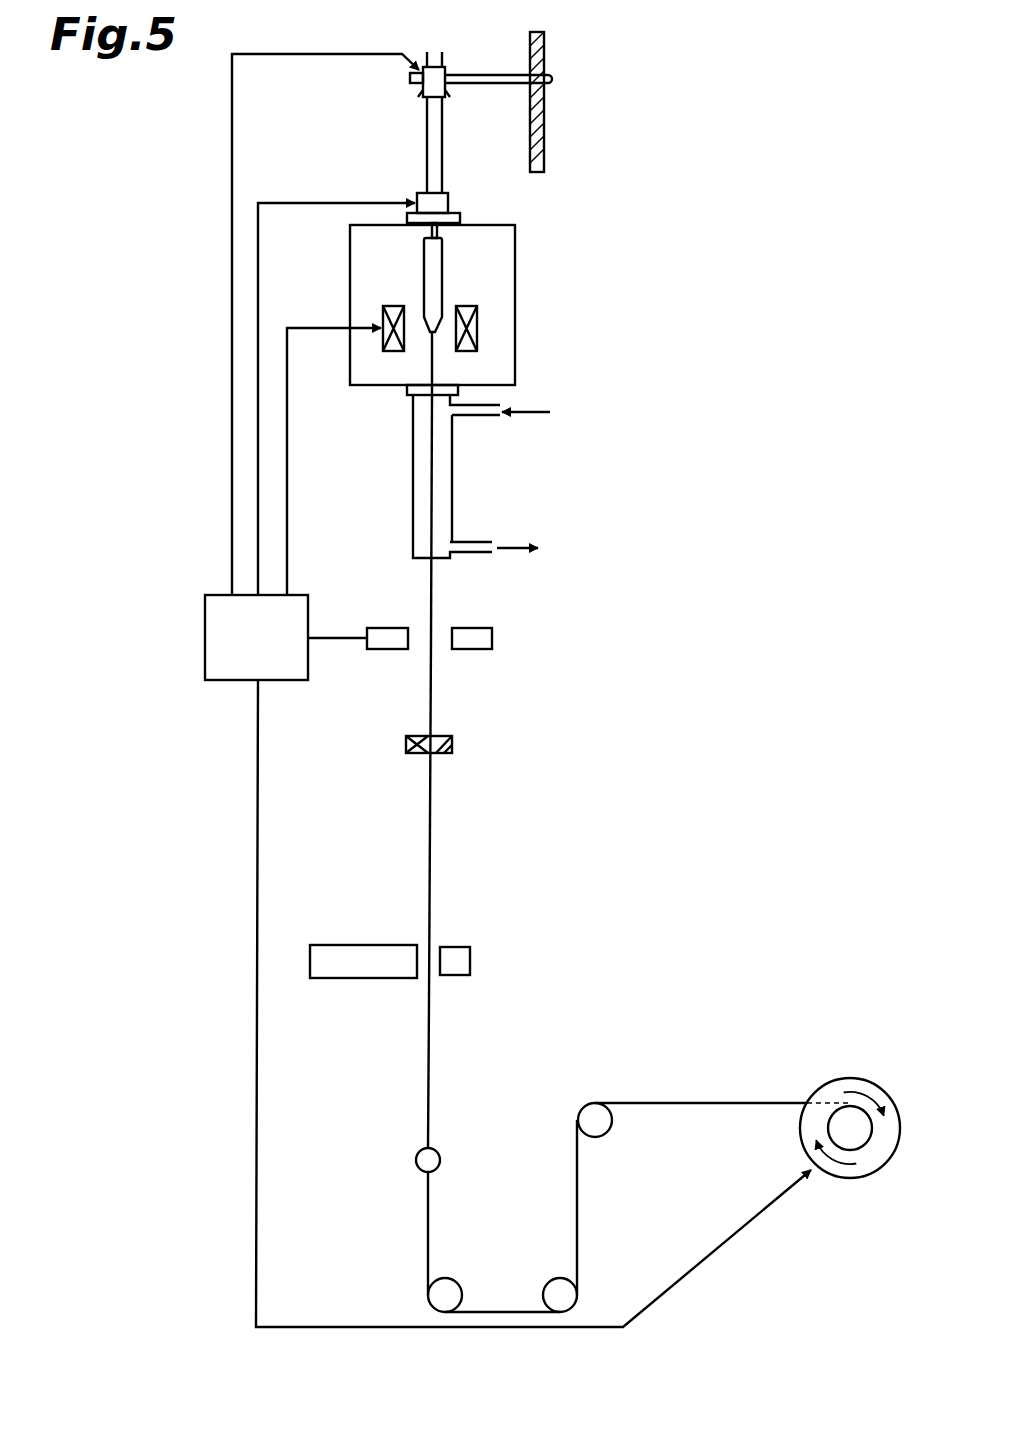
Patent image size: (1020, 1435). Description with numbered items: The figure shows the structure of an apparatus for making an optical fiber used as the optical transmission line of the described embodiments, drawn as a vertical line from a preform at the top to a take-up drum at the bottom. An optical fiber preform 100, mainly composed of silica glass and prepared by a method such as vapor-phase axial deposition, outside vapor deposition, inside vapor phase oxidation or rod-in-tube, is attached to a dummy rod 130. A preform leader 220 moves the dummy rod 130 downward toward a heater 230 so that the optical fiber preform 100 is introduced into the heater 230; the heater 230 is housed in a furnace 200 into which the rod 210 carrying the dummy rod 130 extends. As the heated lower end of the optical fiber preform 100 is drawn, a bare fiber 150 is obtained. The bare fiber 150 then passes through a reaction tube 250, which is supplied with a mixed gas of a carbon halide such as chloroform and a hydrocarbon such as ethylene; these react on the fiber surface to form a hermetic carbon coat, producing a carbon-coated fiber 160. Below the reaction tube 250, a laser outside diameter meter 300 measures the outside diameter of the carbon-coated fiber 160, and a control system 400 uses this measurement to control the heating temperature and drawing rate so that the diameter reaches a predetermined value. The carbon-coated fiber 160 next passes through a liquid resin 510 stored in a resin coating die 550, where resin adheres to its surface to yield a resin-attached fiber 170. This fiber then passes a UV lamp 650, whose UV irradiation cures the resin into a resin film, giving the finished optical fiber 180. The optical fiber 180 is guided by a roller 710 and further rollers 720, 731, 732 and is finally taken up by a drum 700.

The optical fiber preform 100 is at (433, 283).
The dummy rod 130 is at (437, 230).
The bare fiber 150 is at (433, 375).
The carbon-coated fiber 160 is at (432, 592).
The resin-attached fiber 170 is at (430, 860).
The optical fiber 180 is at (430, 1038).
The drawing furnace 200 is at (515, 335).
The feed rod 210 is at (457, 213).
The preform leader 220 is at (544, 108).
The heater 230 is at (393, 351).
The reaction tube 250 is at (450, 500).
The laser outside diameter meter 300 is at (492, 638).
The control system 400 is at (292, 680).
The liquid resin 510 is at (443, 733).
The resin coating die 550 is at (452, 745).
The UV lamp 650 is at (368, 952).
The drum 700 is at (863, 1167).
The guide roller 710 is at (415, 1160).
The roller 720 is at (450, 1278).
The roller 731 is at (557, 1278).
The roller 732 is at (612, 1132).